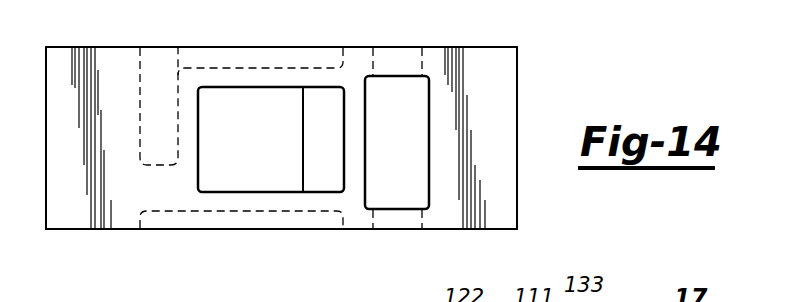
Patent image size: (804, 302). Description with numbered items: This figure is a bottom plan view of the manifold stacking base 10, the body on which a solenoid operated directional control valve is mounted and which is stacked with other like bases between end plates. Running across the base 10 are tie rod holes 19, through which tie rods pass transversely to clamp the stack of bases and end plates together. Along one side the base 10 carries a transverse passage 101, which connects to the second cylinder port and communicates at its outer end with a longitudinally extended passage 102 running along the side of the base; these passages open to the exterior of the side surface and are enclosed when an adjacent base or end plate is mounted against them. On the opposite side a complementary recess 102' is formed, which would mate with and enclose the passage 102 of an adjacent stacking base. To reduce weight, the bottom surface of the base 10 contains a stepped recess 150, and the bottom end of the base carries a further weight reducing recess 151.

The manifold stacking base 10 is at (96, 234).
The transverse passage 101 is at (141, 80).
The longitudinally extended passage 102 is at (260, 40).
The complementary recess 102' is at (241, 242).
The stepped recess 150 is at (344, 172).
The weight reducing recess 151 is at (432, 96).
The tie rod holes 19 is at (373, 212).